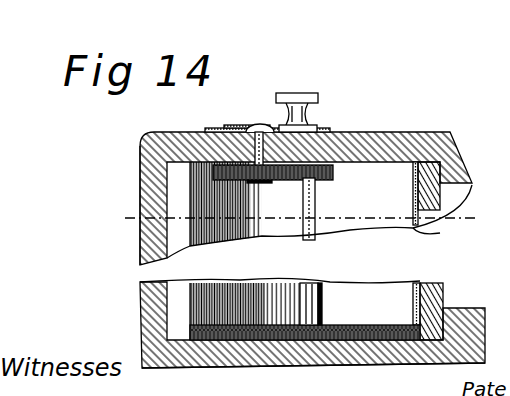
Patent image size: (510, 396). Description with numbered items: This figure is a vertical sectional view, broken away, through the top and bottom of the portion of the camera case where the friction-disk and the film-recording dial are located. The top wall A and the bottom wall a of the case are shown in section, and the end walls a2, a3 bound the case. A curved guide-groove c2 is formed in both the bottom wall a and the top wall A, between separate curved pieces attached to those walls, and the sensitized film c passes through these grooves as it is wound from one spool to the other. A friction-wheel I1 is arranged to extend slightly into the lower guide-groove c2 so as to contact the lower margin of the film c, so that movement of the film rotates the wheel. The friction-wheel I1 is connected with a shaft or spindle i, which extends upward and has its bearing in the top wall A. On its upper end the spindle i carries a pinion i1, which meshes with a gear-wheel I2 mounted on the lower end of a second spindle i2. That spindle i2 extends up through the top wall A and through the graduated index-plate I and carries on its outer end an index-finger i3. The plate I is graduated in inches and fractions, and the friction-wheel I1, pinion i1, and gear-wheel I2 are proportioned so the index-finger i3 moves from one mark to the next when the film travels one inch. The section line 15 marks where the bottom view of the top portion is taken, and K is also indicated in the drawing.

The top wall A is at (358, 131).
The bottom wall a is at (365, 364).
The end wall a2 is at (509, 122).
The end wall a3 is at (147, 235).
The graduated plate I is at (213, 131).
The friction-wheel I1 is at (380, 313).
The gear-wheel I2 is at (256, 184).
The shaft or spindle i is at (317, 307).
The pinion i1 is at (332, 172).
The spindle i2 is at (254, 126).
The index-finger i3 is at (232, 126).
The sensitized film c is at (422, 280).
The curved groove c2 is at (446, 284).
The spring K is at (442, 212).
The section line 15 15 is at (294, 218).